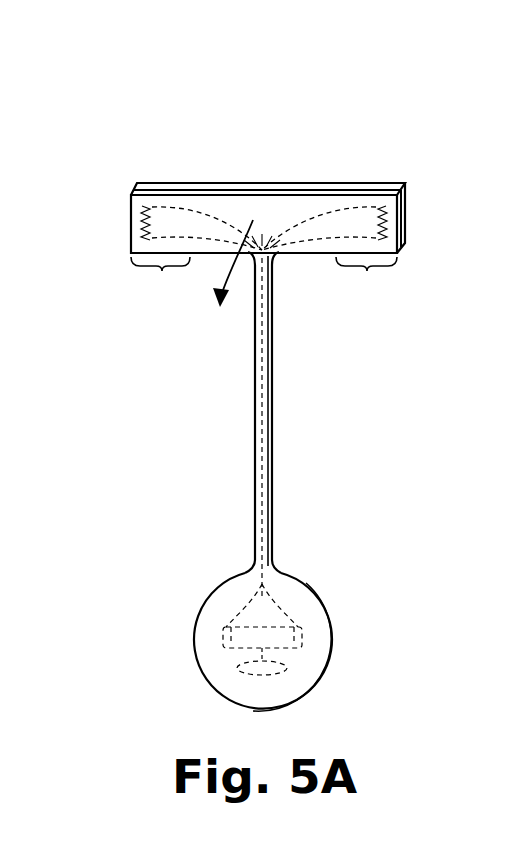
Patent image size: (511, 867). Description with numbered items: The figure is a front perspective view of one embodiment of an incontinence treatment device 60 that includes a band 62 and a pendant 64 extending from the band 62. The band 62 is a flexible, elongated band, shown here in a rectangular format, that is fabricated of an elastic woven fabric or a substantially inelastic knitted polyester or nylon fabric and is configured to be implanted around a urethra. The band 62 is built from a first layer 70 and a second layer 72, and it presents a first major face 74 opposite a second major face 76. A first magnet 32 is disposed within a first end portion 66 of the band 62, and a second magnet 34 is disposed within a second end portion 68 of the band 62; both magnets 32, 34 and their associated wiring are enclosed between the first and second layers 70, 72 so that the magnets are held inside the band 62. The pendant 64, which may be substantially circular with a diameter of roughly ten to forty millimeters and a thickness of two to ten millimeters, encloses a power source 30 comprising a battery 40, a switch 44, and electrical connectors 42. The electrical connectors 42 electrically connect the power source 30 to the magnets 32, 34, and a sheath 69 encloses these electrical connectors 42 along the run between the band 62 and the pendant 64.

The incontinence treatment device 60 is at (97, 143).
The band 62 is at (390, 176).
The second layer 72 is at (405, 202).
The first layer 70 is at (405, 228).
The second major face 76 is at (303, 183).
The first magnet 32 is at (154, 184).
The second magnet 34 is at (363, 184).
The first major face 74 is at (267, 212).
The first end portion 66 is at (160, 277).
The second end portion 68 is at (366, 277).
The sheath 69 is at (256, 512).
The pendant 64 is at (312, 587).
The power source 30 is at (196, 642).
The electrical connectors 42 is at (249, 600).
The battery 40 is at (298, 652).
The switch 44 is at (245, 678).